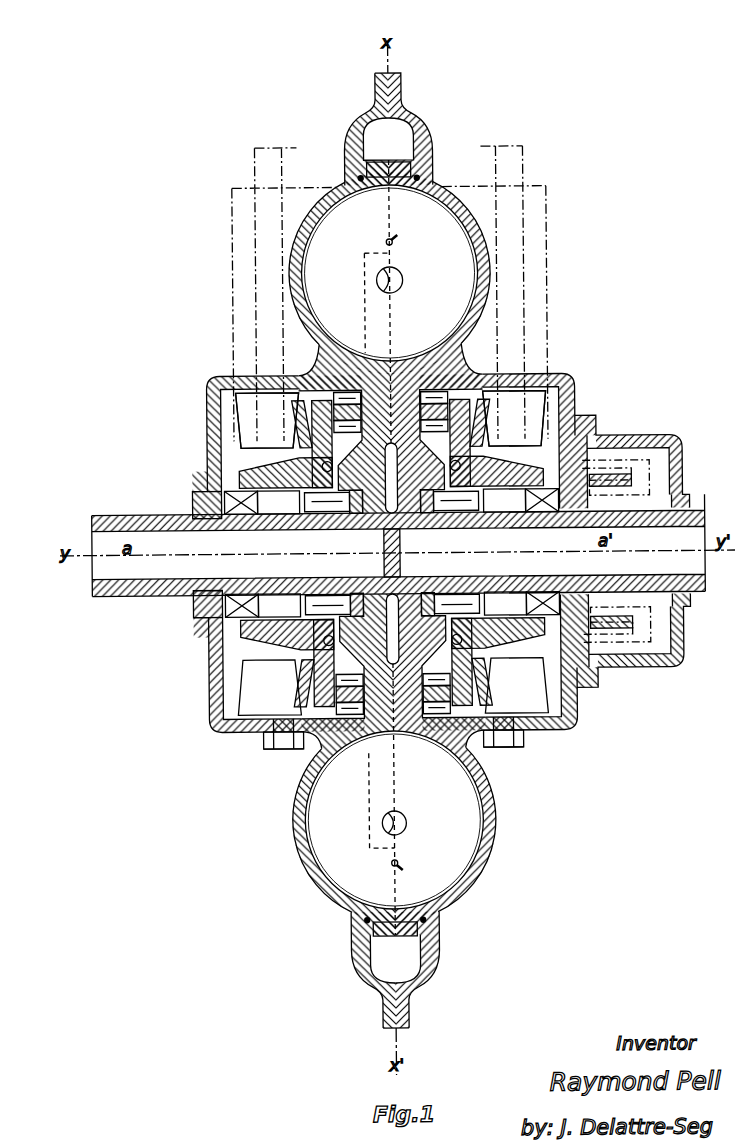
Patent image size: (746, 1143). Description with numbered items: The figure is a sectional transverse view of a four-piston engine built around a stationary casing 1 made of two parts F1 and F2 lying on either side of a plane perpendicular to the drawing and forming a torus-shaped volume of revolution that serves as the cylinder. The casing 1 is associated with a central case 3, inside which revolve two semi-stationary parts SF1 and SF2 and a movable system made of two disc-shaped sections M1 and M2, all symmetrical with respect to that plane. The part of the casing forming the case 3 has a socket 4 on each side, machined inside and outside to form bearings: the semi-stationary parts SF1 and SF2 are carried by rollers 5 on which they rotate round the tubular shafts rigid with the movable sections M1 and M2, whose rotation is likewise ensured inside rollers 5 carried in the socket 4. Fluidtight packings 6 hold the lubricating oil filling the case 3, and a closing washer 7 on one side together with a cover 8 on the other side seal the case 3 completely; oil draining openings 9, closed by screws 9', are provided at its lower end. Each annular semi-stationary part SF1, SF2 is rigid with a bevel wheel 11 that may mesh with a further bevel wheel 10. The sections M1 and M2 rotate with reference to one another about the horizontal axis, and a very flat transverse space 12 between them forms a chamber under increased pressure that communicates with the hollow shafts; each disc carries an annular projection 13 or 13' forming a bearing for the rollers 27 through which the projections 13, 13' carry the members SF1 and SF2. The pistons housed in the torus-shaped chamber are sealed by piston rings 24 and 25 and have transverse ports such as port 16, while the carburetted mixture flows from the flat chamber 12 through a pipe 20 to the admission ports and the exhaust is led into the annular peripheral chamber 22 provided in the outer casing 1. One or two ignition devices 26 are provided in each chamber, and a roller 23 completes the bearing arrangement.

The stationary casing 1 is at (217, 388).
The central case 3 is at (233, 456).
The socket 4 is at (210, 634).
The rollers 5 is at (208, 483).
The fluidtight packings 6 is at (200, 500).
The closing washer 7 is at (192, 508).
The cover 8 is at (657, 440).
The oil draining openings 9 is at (406, 755).
The screws 9' is at (400, 785).
The bevel wheel 10 is at (238, 415).
The bevel wheel 11 is at (290, 393).
The flat transverse space 12 is at (205, 598).
The annular projection 13 is at (210, 587).
The annular projection 13' is at (564, 494).
The transverse port 16 is at (380, 274).
The pipe 20 is at (363, 400).
The annular peripheral chamber 22 is at (404, 140).
The bearing 23 is at (345, 395).
The piston ring 24 is at (492, 865).
The piston ring 25 is at (446, 762).
The ignition device 26 is at (391, 239).
The rollers 27 is at (470, 397).
The casing part F1 is at (330, 197).
The casing part F2 is at (450, 188).
The semi-stationary part SF1 is at (315, 636).
The semi-stationary part SF2 is at (490, 647).
The movable section M1 is at (367, 745).
The movable section M2 is at (415, 746).